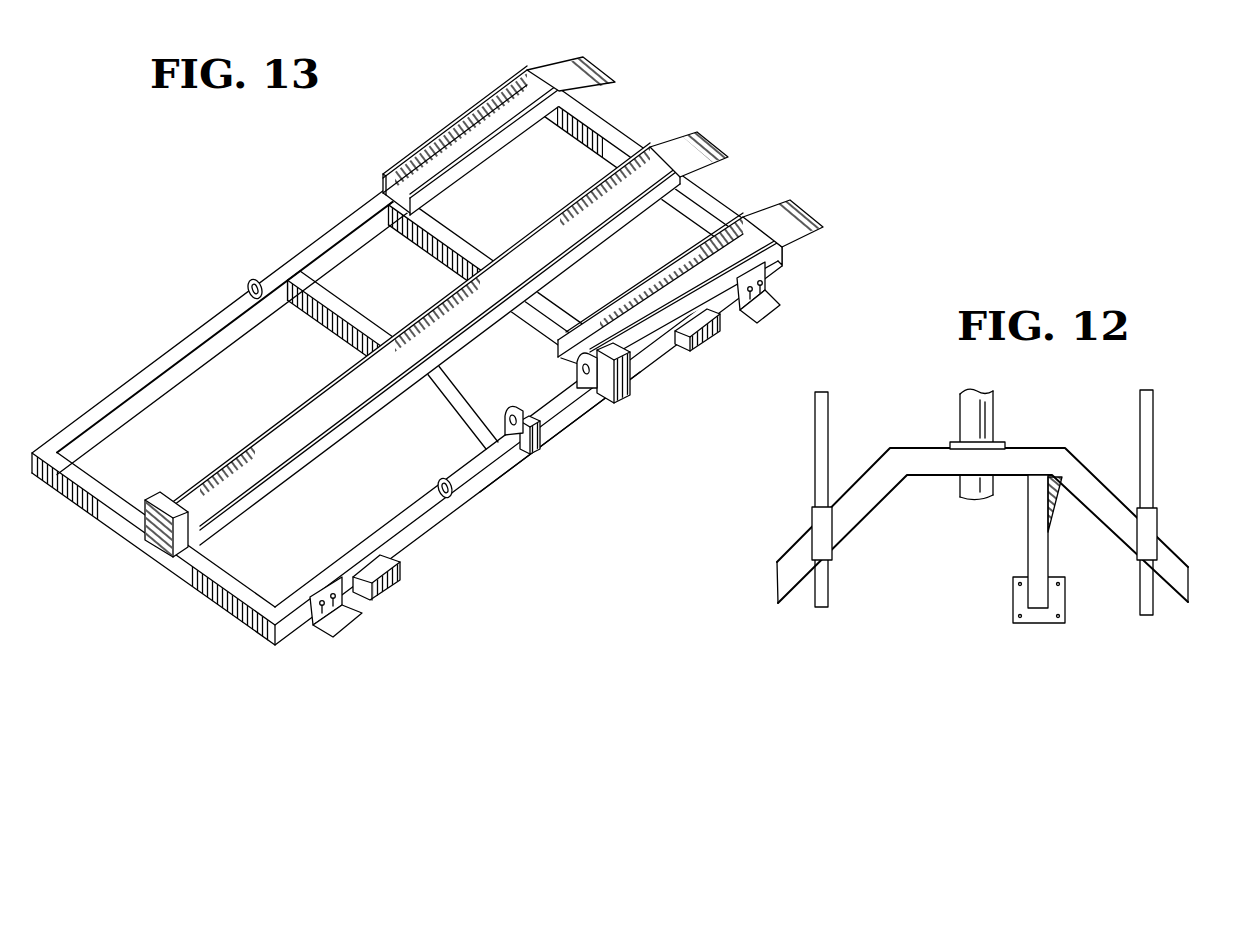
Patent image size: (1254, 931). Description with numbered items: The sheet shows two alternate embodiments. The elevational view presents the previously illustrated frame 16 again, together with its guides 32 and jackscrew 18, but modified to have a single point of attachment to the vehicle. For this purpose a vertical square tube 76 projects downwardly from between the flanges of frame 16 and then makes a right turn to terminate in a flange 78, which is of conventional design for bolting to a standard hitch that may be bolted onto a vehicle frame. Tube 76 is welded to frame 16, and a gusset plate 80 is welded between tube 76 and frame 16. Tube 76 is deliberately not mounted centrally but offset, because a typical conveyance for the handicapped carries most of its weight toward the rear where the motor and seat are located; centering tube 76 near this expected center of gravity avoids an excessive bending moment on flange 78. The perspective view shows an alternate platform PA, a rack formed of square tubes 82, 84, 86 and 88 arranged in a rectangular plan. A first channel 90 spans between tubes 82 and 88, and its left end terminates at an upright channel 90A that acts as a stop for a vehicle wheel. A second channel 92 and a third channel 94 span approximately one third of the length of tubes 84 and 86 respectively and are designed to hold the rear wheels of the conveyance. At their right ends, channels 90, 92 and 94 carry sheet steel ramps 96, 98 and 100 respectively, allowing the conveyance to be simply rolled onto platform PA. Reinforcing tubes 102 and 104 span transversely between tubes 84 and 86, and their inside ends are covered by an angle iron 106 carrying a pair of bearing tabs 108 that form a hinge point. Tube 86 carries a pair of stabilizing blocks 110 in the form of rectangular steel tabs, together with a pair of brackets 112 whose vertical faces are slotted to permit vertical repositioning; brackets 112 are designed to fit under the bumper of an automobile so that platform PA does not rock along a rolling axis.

In FIG. 13, the platform PA is at (158, 352).
In FIG. 13, the square tube 82 is at (126, 540).
In FIG. 13, the square tube 84 is at (177, 383).
In FIG. 13, the square tube 86 is at (392, 528).
In FIG. 13, the square tube 88 is at (600, 112).
In FIG. 13, the first channel 90 is at (326, 390).
In FIG. 13, the upright channel 90A is at (157, 490).
In FIG. 13, the second channel 92 is at (495, 82).
In FIG. 13, the third channel 94 is at (678, 258).
In FIG. 13, the ramp 96 is at (712, 140).
In FIG. 13, the ramp 98 is at (598, 66).
In FIG. 13, the ramp 100 is at (826, 217).
In FIG. 13, the reinforcing tube 102 is at (330, 288).
In FIG. 13, the reinforcing tube 104 is at (443, 283).
In FIG. 13, the angle iron 106 is at (573, 432).
In FIG. 13, the bearing tabs 108 is at (578, 371).
In FIG. 13, the stabilizing blocks 110 is at (392, 587).
In FIG. 13, the brackets 112 is at (350, 624).
In FIG. 12, the frame 16 is at (881, 467).
In FIG. 12, the jackscrew 18 is at (995, 418).
In FIG. 12, the guides 32 is at (984, 502).
In FIG. 12, the vertical square tube 76 is at (1027, 524).
In FIG. 12, the flange 78 is at (1066, 600).
In FIG. 12, the gusset plate 80 is at (1074, 503).